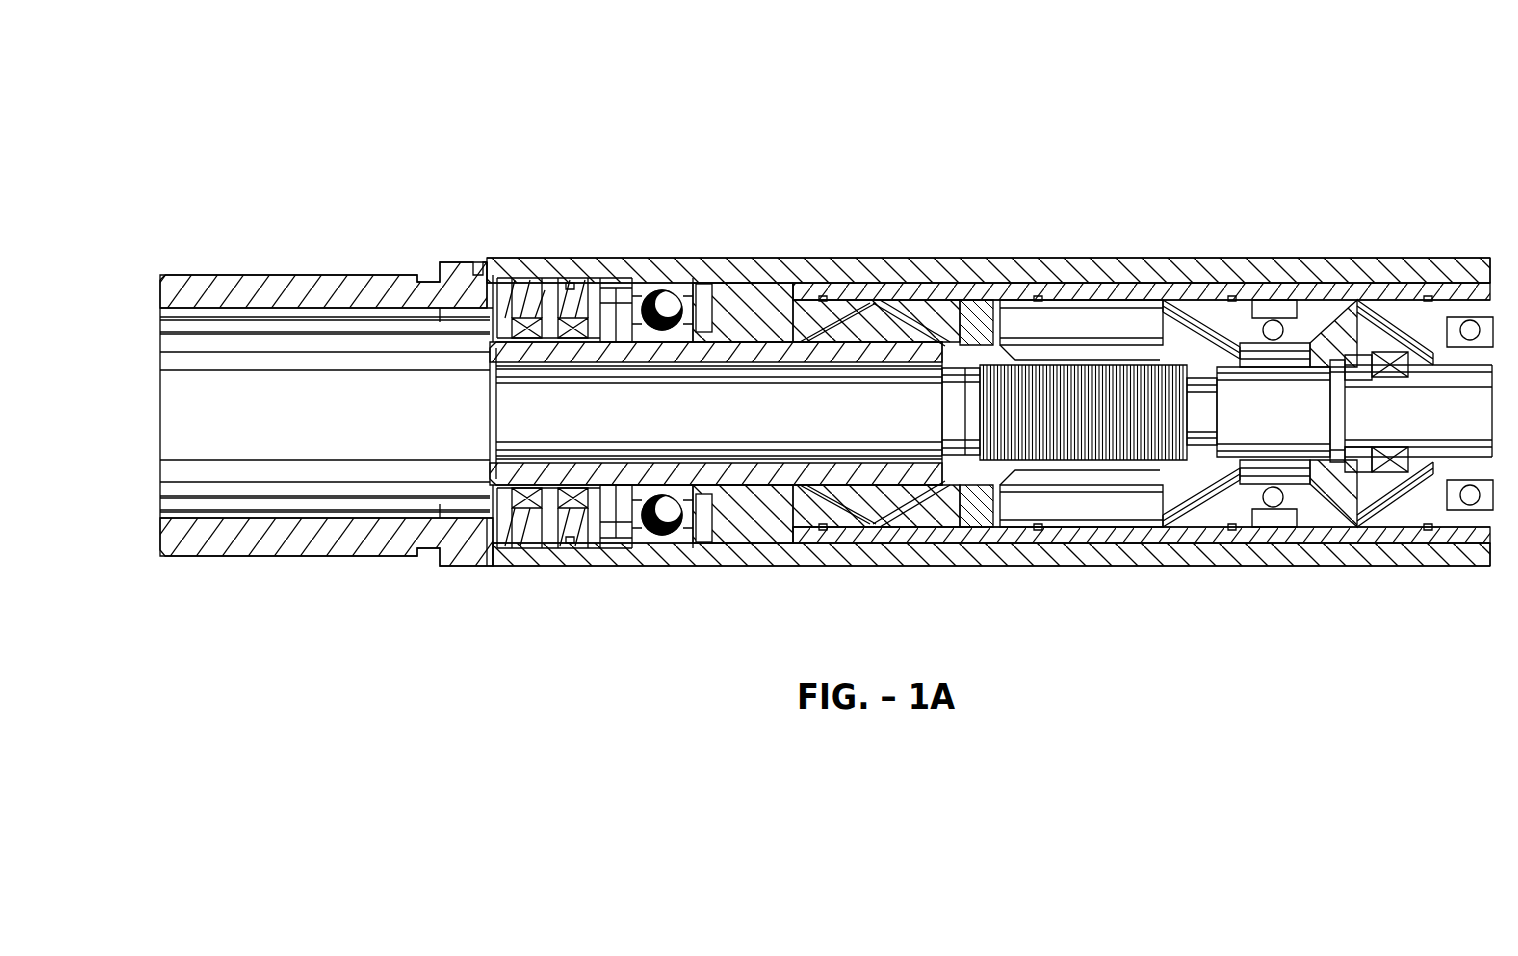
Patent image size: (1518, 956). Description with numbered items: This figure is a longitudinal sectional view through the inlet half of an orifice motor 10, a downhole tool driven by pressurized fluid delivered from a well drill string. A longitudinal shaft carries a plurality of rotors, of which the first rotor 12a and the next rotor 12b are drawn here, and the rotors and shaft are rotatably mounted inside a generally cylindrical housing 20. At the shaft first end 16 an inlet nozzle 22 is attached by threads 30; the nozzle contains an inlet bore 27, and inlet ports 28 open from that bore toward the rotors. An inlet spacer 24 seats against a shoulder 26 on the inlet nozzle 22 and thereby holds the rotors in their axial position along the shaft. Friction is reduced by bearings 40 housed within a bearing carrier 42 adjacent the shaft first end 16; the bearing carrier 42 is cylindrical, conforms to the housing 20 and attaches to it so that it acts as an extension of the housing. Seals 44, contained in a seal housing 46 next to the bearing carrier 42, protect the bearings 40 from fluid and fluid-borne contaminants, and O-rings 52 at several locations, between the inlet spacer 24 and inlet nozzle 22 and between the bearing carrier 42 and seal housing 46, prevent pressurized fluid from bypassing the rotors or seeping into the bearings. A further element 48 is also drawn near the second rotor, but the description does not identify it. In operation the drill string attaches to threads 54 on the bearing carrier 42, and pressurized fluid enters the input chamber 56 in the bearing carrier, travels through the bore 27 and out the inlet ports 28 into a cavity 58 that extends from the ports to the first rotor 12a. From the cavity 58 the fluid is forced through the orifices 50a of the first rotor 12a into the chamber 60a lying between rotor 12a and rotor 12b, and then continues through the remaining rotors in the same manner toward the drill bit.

The orifice motor 10 is at (657, 130).
The first rotor 12a is at (1207, 290).
The second rotor 12b is at (1390, 292).
The shaft first end 16 is at (966, 407).
The housing 20 is at (1128, 272).
The inlet nozzle 22 is at (738, 335).
The inlet spacer 24 is at (955, 293).
The shoulder 26 is at (782, 290).
The inlet bore 27 is at (515, 417).
The inlet ports 28 is at (893, 332).
The threads 30 is at (1082, 375).
The bearings 40 is at (667, 290).
The bearing carrier 42 is at (452, 266).
The seals 44 is at (578, 335).
The seal housing 46 is at (512, 335).
The seal assembly 48 is at (1387, 470).
The orifices 50a is at (1278, 318).
The O-rings 52 is at (828, 298).
The threads 54 is at (232, 272).
The input chamber 56 is at (326, 382).
The cavity 58 is at (1110, 328).
The chamber 60a is at (1340, 315).